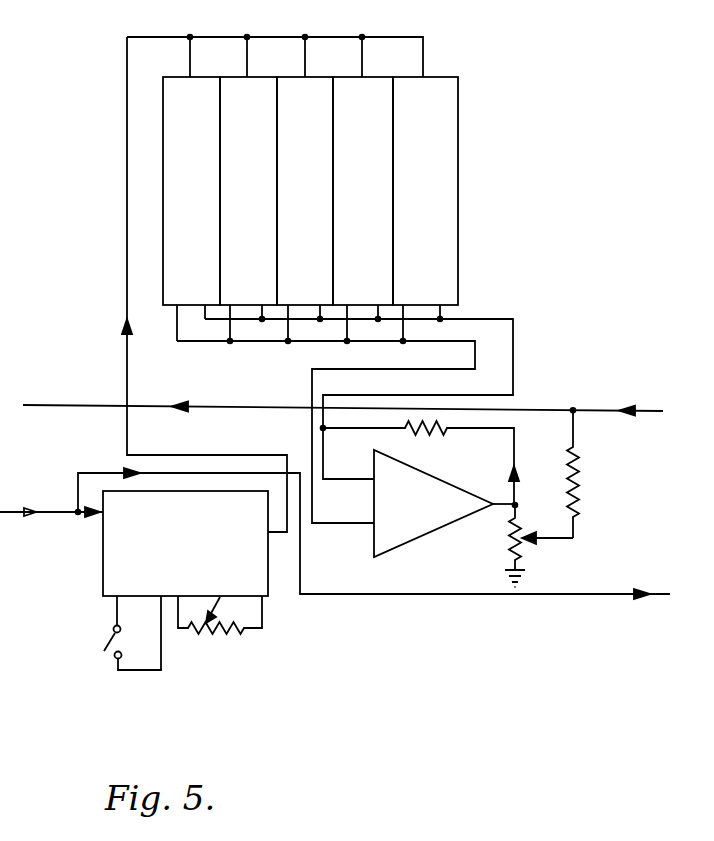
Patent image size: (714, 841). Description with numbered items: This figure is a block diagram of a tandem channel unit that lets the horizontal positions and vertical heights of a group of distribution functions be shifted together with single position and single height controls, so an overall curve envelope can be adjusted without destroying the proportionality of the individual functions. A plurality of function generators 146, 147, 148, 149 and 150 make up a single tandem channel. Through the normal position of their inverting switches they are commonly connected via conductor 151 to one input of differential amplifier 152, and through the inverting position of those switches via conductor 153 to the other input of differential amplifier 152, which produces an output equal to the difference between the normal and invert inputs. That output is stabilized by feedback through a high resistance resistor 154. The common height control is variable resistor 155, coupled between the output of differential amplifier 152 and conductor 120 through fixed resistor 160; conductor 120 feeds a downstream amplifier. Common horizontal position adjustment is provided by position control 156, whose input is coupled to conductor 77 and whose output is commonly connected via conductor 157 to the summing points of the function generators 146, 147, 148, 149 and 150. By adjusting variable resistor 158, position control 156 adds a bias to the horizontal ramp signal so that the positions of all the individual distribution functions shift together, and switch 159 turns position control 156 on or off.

The function generator 146 is at (191, 209).
The function generator 147 is at (248, 209).
The function generator 148 is at (305, 209).
The function generator 149 is at (363, 209).
The function generator 150 is at (425, 209).
The conductor 151 is at (312, 383).
The conductor 153 is at (513, 362).
The conductor 157 is at (127, 115).
The conductor 120 is at (70, 398).
The differential amplifier 152 is at (446, 503).
The resistor 154 is at (421, 463).
The variable resistor 155 is at (505, 554).
The fixed resistor 160 is at (580, 483).
The position control 156 is at (185, 543).
The variable resistor 158 is at (227, 637).
The switch 159 is at (113, 637).
The conductor 77 is at (14, 511).